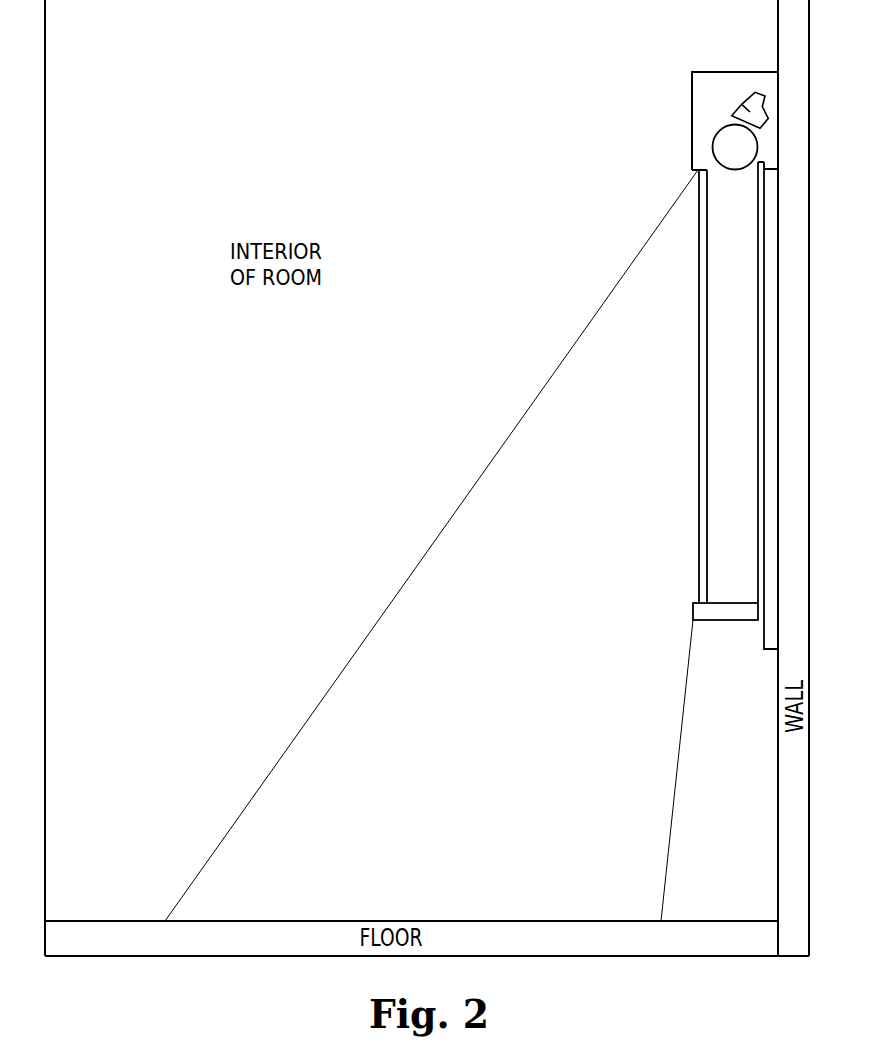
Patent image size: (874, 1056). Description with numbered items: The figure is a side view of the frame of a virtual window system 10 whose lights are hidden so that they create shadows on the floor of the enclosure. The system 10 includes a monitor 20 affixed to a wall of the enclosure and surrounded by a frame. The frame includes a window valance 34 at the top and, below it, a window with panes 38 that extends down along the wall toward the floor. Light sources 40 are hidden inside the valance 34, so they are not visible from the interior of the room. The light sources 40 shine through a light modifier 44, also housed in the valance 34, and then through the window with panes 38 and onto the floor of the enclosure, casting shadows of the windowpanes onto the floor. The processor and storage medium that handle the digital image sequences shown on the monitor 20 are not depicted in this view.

The system 10 is at (674, 384).
The monitor 20 is at (757, 243).
The window valance 34 is at (707, 86).
The window with panes 38 is at (698, 299).
The light sources 40 is at (740, 107).
The light modifier 44 is at (720, 146).